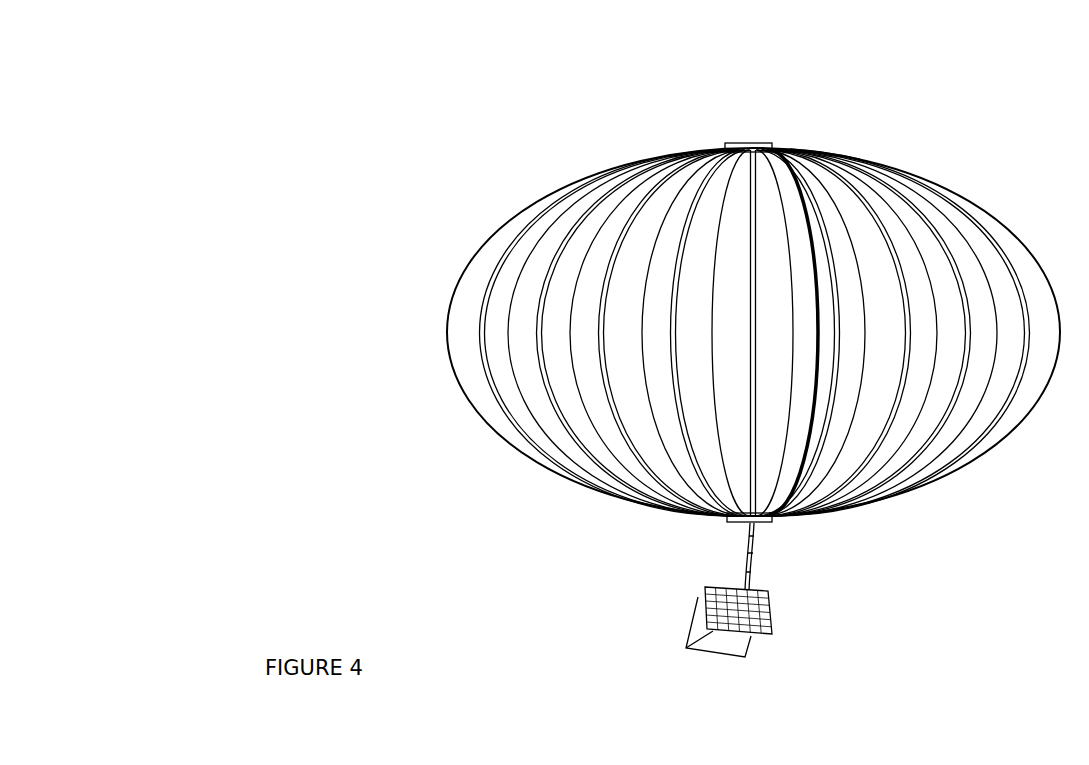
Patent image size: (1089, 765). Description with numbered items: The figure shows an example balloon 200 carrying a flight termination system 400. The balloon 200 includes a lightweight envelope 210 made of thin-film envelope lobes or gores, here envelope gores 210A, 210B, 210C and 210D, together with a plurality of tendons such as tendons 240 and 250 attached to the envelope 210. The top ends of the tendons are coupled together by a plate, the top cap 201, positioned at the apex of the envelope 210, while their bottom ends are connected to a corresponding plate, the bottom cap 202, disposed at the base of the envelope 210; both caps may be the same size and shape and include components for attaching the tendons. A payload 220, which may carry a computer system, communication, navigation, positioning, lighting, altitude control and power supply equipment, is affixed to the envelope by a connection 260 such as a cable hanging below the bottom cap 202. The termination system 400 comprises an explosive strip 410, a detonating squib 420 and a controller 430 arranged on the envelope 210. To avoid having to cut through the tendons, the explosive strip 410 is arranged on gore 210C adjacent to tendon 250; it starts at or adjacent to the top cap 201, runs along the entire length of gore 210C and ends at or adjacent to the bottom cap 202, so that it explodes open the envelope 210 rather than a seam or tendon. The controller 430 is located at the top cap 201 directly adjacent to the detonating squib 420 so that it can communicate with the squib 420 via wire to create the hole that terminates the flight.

The balloon 200 is at (656, 64).
The top cap 201 is at (742, 142).
The bottom cap 202 is at (735, 521).
The envelope 210 is at (518, 212).
The envelope gore 210A is at (500, 372).
The envelope gore 210B is at (563, 372).
The envelope gore 210C is at (800, 428).
The envelope gore 210D is at (870, 412).
The payload 220 is at (771, 601).
The tendon 240 is at (557, 205).
The tendon 250 is at (612, 192).
The connection 260 is at (752, 566).
The termination system 400 is at (323, 642).
The explosive strip 410 is at (820, 147).
The detonating squib 420 is at (787, 148).
The controller 430 is at (770, 142).